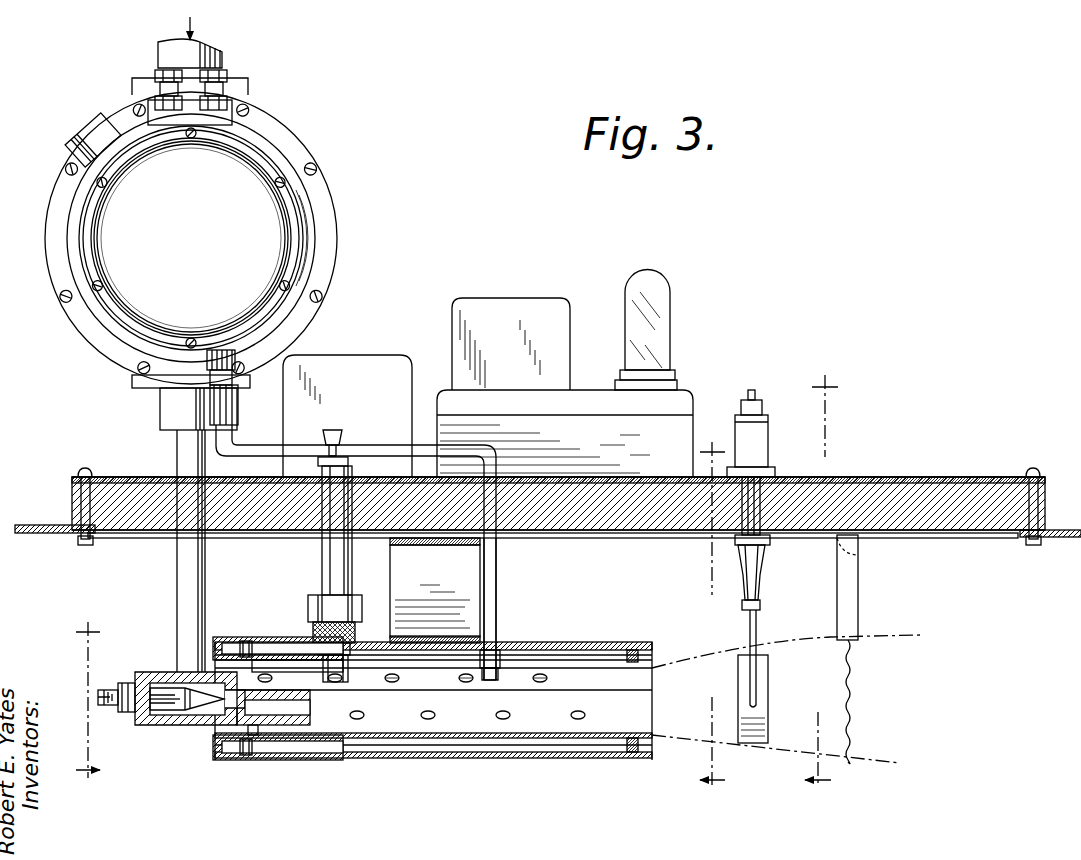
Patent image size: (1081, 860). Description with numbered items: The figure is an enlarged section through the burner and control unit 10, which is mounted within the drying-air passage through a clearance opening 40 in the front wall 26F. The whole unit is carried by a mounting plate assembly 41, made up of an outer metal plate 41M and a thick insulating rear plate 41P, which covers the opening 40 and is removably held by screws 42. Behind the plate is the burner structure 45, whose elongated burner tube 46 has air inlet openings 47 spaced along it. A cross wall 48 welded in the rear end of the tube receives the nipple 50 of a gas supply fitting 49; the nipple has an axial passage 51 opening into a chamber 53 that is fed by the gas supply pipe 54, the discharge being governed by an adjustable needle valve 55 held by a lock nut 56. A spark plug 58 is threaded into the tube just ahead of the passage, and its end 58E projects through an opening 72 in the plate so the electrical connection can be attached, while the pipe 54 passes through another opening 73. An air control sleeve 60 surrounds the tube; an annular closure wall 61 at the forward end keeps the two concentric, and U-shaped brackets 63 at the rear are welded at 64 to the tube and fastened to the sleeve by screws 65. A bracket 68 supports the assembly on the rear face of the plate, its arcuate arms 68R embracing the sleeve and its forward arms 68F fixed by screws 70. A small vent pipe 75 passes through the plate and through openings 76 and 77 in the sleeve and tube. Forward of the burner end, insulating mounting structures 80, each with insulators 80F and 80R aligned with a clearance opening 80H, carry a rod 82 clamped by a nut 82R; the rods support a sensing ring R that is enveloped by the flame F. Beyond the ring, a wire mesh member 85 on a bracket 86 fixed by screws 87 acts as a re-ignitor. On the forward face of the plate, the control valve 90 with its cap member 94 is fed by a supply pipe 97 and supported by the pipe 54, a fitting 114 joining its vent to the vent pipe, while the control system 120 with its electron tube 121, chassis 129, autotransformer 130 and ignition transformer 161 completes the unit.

The burner and control unit 10 is at (912, 604).
The front wall 26F is at (30, 526).
The clearance opening 40 is at (150, 538).
The mounting plate assembly 41 is at (900, 480).
The outer metal plate 41M is at (956, 478).
The inner insulating plate 41P is at (968, 533).
The screws 42 is at (92, 473).
The burner structure 45 is at (541, 759).
The burner tube 46 is at (430, 720).
The air inlet openings 47 is at (541, 676).
The cross wall 48 is at (292, 742).
The gas supply fitting 49 is at (202, 713).
The nipple 50 is at (377, 736).
The passage 51 is at (300, 745).
The chamber 53 is at (222, 728).
The gas supply pipe 54 is at (178, 598).
The needle valve 55 is at (168, 716).
The lock nut 56 is at (126, 693).
The spark plug 58 is at (322, 566).
The spark plug end 58E is at (324, 458).
The air control sleeve 60 is at (590, 759).
The annular closure wall 61 is at (641, 650).
The brackets 63 is at (222, 640).
The weld 64 is at (266, 660).
The screws 65 is at (247, 645).
The bracket 68 is at (464, 583).
The forward arms 68F is at (452, 555).
The rearwardly projecting arms 68R is at (463, 638).
The screws 70 is at (435, 591).
The opening 72 is at (378, 477).
The opening 73 is at (178, 488).
The vent pipe 75 is at (497, 617).
The opening 76 is at (497, 638).
The opening 77 is at (500, 680).
The insulating mounting structures 80 is at (769, 463).
The forward insulator 80F is at (768, 440).
The clearance opening 80H is at (762, 500).
The rear insulator 80R is at (768, 550).
The rod 82 is at (750, 628).
The nut 82R is at (742, 611).
The wire mesh member 85 is at (852, 684).
The bracket 86 is at (858, 584).
The screws 87 is at (856, 553).
The control valve 90 is at (347, 213).
The cap member 94 is at (118, 237).
The supply pipe 97 is at (222, 54).
The fitting 114 is at (233, 400).
The control system 120 is at (580, 305).
The electron tube 121 is at (668, 300).
The chassis 129 is at (680, 396).
The autotransformer 130 is at (466, 320).
The ignition transformer 161 is at (364, 358).
The flame F is at (796, 653).
The sensing ring R is at (768, 684).